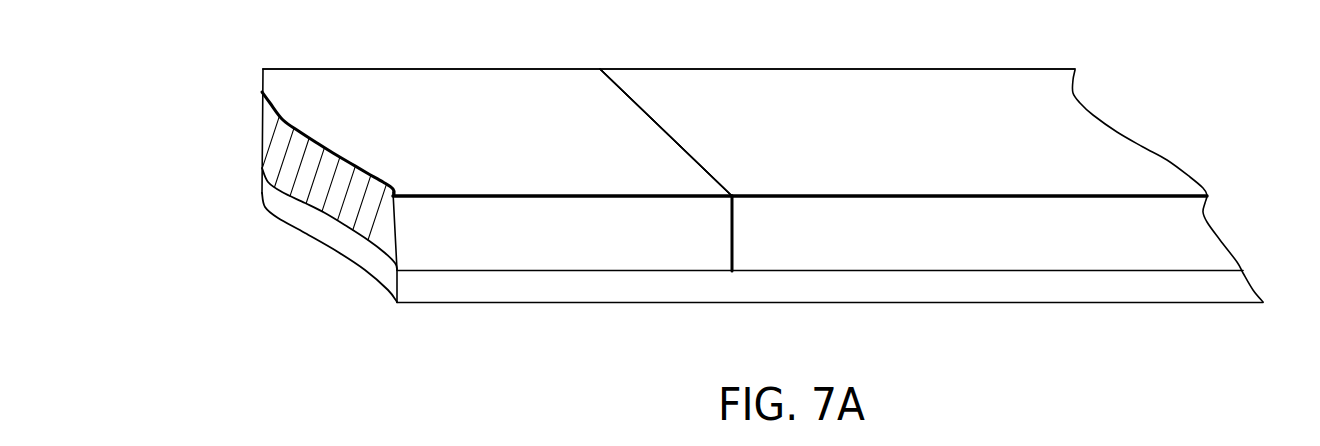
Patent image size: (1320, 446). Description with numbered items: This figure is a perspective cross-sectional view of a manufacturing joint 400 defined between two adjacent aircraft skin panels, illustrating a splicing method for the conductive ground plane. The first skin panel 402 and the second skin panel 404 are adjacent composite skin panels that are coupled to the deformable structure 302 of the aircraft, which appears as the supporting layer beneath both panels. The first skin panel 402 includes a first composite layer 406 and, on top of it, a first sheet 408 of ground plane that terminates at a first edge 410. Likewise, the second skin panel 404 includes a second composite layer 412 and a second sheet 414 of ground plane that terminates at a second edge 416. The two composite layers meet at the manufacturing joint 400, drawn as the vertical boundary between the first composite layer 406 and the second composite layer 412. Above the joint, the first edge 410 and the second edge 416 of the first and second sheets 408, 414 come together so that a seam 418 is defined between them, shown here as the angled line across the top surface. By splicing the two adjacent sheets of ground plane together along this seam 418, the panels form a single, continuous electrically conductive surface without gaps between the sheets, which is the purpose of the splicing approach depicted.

The first skin panel 402 is at (242, 92).
The second skin panel 404 is at (1187, 150).
The first sheet 408 is at (435, 93).
The first edge 410 is at (623, 92).
The seam 418 is at (650, 110).
The second edge 416 is at (687, 150).
The second sheet 414 is at (905, 98).
The first composite layer 406 is at (641, 251).
The second composite layer 412 is at (993, 251).
The manufacturing joint 400 is at (732, 243).
The deformable structure 302 is at (628, 293).